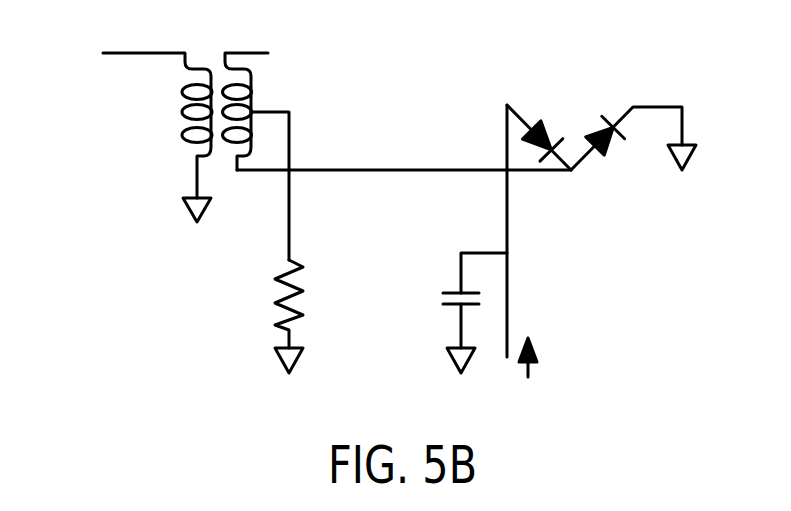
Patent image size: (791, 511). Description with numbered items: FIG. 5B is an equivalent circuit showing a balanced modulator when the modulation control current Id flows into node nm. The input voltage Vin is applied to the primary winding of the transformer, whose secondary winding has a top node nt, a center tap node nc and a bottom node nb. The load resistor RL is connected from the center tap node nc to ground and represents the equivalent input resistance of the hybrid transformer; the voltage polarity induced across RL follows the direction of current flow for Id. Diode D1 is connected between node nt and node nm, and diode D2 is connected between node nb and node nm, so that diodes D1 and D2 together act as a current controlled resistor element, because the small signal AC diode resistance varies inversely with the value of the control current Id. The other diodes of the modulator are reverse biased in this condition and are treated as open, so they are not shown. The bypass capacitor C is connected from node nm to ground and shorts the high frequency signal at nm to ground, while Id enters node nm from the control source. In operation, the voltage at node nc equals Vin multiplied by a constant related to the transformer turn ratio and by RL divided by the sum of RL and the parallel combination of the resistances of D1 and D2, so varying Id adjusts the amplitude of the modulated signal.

The input voltage Vin is at (137, 120).
The node nt is at (254, 94).
The node nc is at (277, 170).
The node nb is at (404, 189).
The resistor RL is at (265, 316).
The node nm is at (482, 221).
The bypass capacitor C is at (460, 313).
The diode D1 is at (543, 129).
The diode D2 is at (633, 150).
The modulation control signal current Id is at (543, 358).